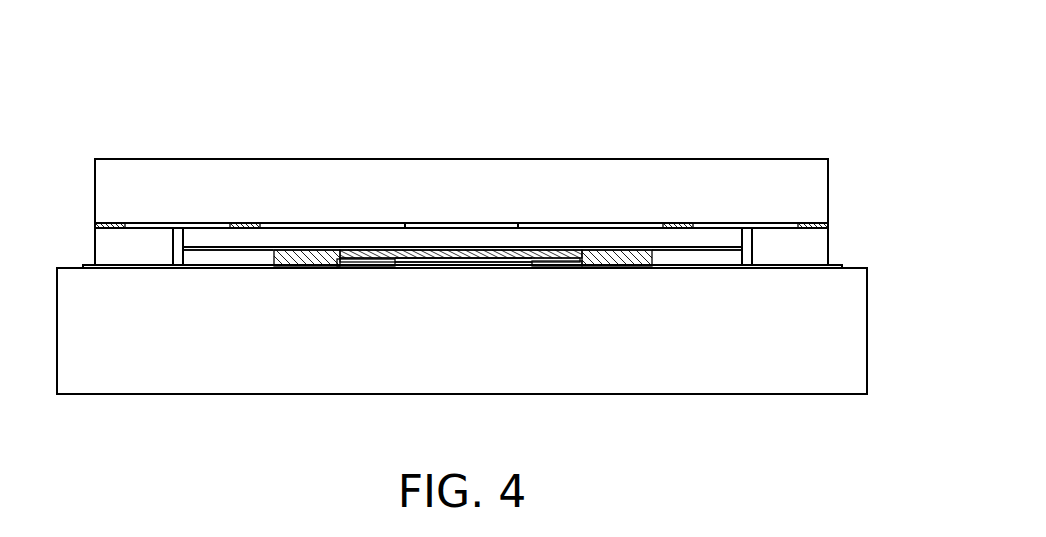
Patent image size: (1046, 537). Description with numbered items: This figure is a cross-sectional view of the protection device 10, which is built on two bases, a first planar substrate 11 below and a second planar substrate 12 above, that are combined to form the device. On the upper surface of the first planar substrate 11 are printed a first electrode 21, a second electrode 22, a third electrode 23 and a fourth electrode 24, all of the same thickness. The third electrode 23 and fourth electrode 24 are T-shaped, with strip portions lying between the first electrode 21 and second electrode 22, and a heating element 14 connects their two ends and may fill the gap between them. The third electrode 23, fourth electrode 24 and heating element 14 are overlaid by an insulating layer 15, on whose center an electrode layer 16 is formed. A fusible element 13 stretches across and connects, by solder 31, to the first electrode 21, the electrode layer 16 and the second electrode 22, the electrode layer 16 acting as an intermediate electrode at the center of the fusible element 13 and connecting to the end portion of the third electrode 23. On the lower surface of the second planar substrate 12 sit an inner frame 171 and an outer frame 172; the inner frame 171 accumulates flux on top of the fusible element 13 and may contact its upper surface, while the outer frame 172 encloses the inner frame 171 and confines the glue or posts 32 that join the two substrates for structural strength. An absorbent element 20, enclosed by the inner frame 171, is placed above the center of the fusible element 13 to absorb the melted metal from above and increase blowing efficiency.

The protection device 10 is at (831, 71).
The first planar substrate 11 is at (239, 383).
The second planar substrate 12 is at (320, 172).
The fusible element 13 is at (612, 238).
The heating element 14 is at (503, 267).
The insulating layer 15 is at (430, 267).
The electrode layer 16 is at (535, 248).
The absorbent element 20 is at (455, 222).
The first electrode 21 is at (137, 266).
The second electrode 22 is at (798, 266).
The third electrode 23 is at (363, 267).
The fourth electrode 24 is at (560, 267).
The solder 31 is at (208, 253).
The posts 32 is at (102, 246).
The inner frame 171 is at (680, 222).
The outer frame 172 is at (818, 222).